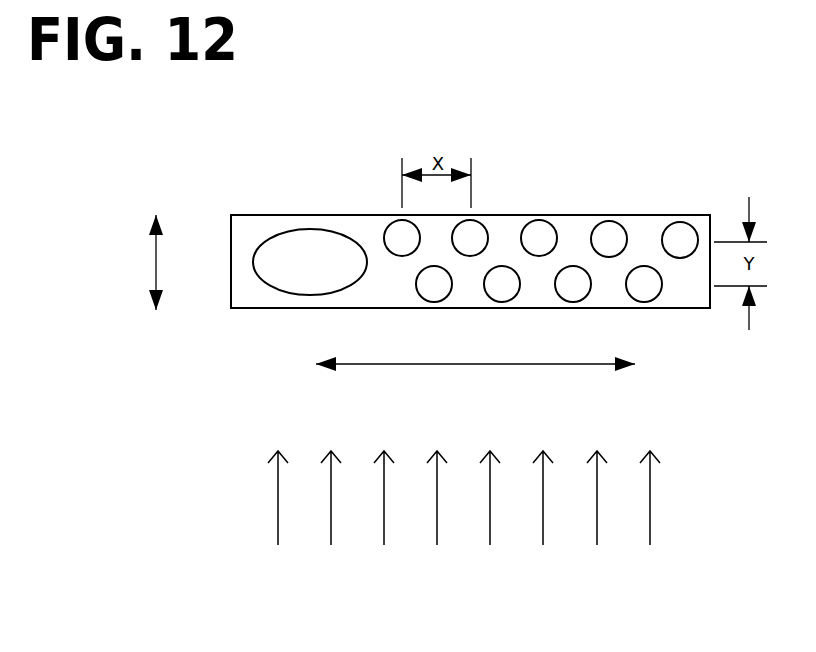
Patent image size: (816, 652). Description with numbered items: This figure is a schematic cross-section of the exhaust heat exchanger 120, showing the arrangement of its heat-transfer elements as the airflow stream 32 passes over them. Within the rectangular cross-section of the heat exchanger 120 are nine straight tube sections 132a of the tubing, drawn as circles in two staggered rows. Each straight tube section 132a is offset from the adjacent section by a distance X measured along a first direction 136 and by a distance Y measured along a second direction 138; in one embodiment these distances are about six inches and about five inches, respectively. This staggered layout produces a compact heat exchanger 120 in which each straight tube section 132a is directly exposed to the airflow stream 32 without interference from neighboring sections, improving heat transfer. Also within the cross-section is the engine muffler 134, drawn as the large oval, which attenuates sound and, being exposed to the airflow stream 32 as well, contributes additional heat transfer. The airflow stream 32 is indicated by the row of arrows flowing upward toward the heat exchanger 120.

The exhaust heat exchanger 120 is at (213, 195).
The straight tube sections 132a is at (392, 222).
The engine muffler 134 is at (302, 292).
The first direction 136 is at (475, 379).
The second direction 138 is at (178, 262).
The airflow stream 32 is at (650, 485).